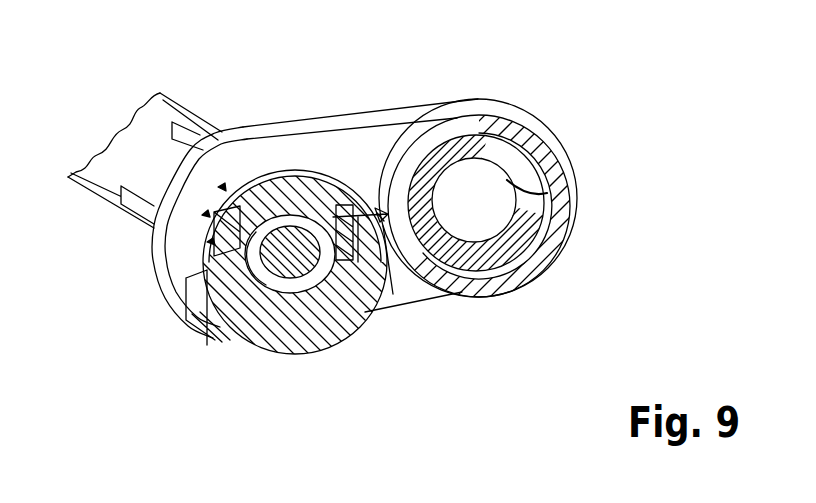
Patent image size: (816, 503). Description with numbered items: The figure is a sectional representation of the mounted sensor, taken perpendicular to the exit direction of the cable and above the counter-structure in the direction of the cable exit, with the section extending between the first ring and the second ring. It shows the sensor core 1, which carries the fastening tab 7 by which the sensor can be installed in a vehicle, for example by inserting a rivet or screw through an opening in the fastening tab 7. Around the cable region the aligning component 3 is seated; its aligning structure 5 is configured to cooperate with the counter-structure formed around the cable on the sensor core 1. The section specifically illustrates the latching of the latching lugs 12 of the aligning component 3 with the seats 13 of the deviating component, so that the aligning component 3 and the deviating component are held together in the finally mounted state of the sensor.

The sensor core 1 is at (341, 222).
The aligning component 3 is at (407, 368).
The aligning structure 5 is at (307, 310).
The fastening tab 7 is at (493, 112).
The latching lugs 12 is at (243, 250).
The seats 13 is at (240, 213).